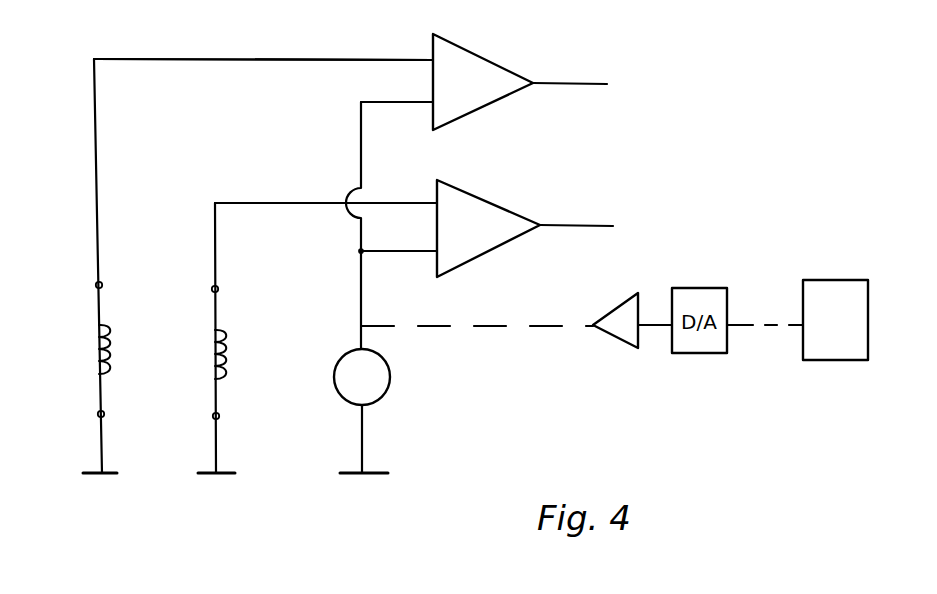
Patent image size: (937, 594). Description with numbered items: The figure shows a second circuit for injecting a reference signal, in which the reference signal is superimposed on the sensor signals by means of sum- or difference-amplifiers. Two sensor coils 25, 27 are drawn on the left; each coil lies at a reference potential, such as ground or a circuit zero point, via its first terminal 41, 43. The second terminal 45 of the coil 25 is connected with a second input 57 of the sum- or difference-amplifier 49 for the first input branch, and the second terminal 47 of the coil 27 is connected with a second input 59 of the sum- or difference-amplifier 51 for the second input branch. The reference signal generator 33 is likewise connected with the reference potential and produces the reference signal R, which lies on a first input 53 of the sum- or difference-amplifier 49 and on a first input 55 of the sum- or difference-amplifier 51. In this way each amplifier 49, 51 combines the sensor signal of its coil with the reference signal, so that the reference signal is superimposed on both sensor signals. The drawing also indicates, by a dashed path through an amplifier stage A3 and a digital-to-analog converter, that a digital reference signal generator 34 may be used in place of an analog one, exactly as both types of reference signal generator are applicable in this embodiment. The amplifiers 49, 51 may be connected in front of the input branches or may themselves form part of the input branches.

The coil 25 is at (87, 350).
The coil 27 is at (214, 355).
The reference signal generator 33 is at (391, 381).
The digital reference signal generator 34 is at (835, 320).
The first terminal 41 is at (77, 417).
The first terminal 43 is at (192, 418).
The second terminal 45 is at (76, 284).
The second terminal 47 is at (194, 292).
The sum- or difference-amplifier 49 is at (480, 100).
The sum- or difference-amplifier 51 is at (483, 247).
The first input 53 is at (413, 106).
The first input 55 is at (413, 255).
The second input 57 is at (279, 66).
The second input 59 is at (340, 209).
The control amplifier A3 is at (612, 318).